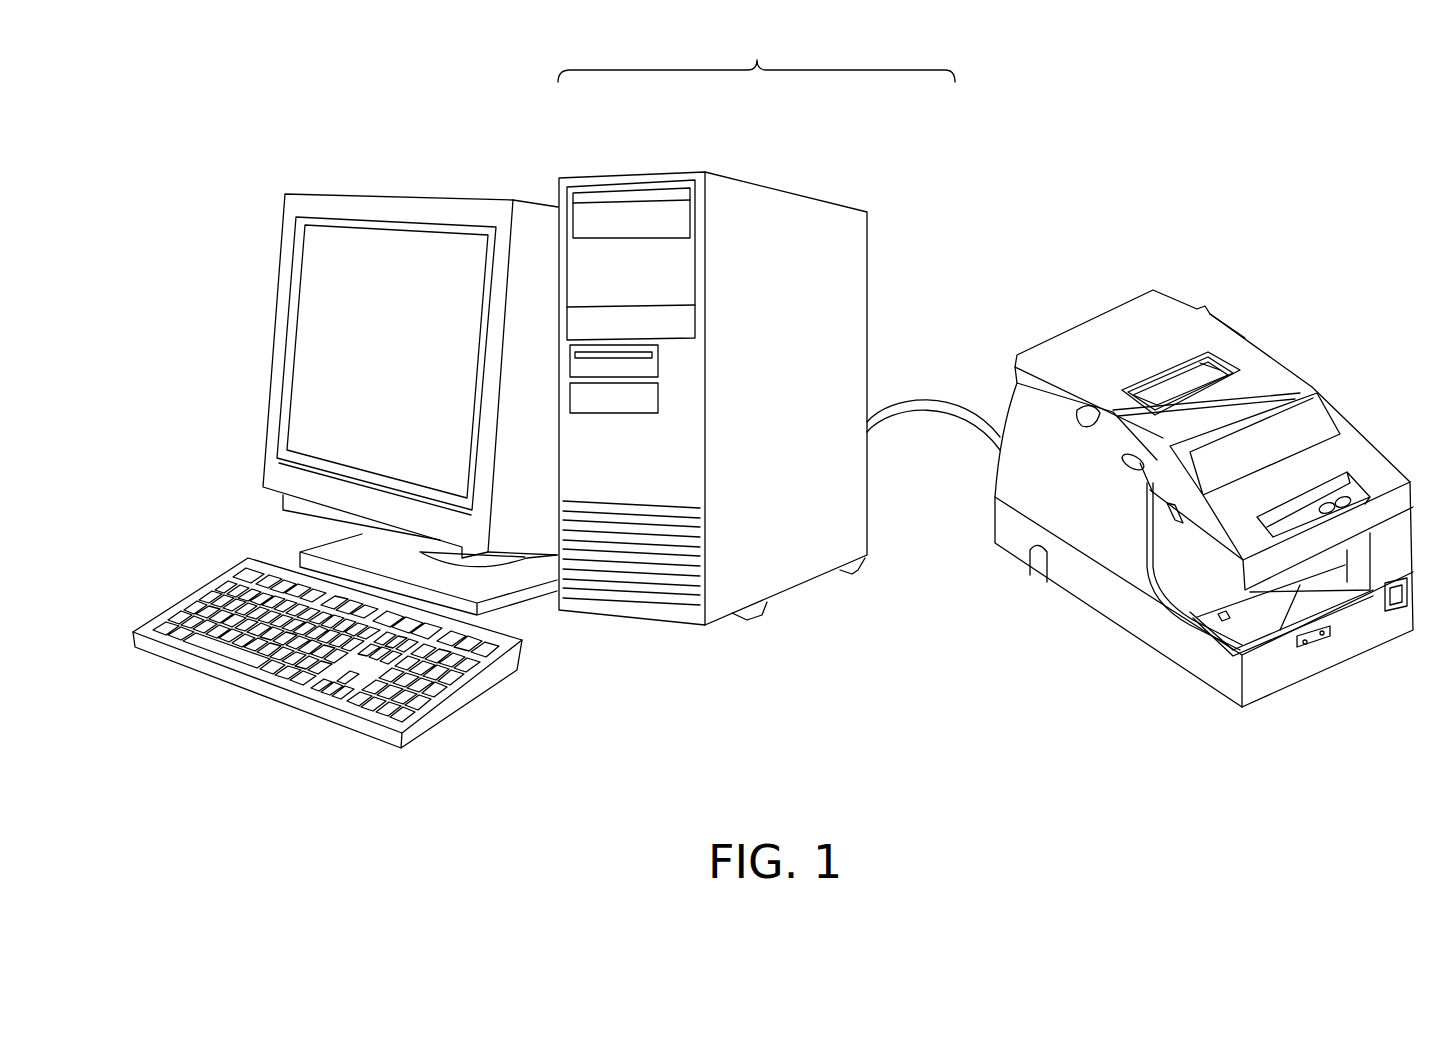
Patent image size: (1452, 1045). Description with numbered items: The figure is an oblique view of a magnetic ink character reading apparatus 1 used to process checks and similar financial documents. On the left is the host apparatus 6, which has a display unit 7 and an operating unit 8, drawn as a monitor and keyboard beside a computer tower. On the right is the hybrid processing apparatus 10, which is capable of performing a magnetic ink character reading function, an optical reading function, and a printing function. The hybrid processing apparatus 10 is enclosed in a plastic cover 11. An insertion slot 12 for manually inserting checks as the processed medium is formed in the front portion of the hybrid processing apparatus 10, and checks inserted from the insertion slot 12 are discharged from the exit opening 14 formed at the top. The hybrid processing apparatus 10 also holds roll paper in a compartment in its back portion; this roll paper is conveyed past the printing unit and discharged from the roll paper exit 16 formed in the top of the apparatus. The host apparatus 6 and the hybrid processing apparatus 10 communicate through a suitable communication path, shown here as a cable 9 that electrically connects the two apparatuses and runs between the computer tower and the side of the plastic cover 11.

The magnetic ink character reading apparatus 1 is at (766, 52).
The host apparatus 6 is at (526, 173).
The display unit 7 is at (327, 270).
The operating unit 8 is at (377, 707).
The cable 9 is at (937, 397).
The hybrid processing apparatus 10 is at (978, 173).
The plastic cover 11 is at (1356, 440).
The insertion slot 12 is at (1291, 586).
The exit opening 14 is at (1259, 391).
The roll paper exit 16 is at (1203, 374).